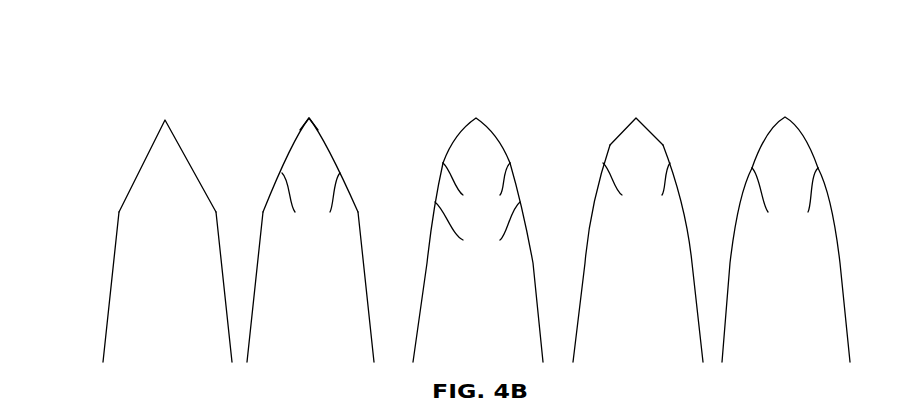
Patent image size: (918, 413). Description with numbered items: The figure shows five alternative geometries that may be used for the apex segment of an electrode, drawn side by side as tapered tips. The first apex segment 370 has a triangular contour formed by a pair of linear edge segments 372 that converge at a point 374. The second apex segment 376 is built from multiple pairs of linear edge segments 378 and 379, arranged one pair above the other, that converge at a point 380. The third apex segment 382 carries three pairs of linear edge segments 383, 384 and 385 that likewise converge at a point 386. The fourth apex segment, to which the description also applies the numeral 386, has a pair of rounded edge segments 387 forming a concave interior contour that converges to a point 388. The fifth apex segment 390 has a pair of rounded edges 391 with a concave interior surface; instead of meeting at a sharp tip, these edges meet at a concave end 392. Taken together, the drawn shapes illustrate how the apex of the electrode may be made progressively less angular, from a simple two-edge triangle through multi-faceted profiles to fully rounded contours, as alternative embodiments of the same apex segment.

The apex segment 370 is at (141, 108).
The linear edge segments 372 is at (142, 165).
The point 374 is at (166, 114).
The apex segment 376 is at (287, 68).
The linear edge segments 378 is at (311, 196).
The linear edge segments 379 is at (299, 130).
The point 380 is at (310, 113).
The apex segment 382 is at (452, 76).
The linear edge segments 383 is at (477, 227).
The linear edge segments 384 is at (476, 186).
The linear edge segments 385 is at (505, 107).
The point / apex segment 386 is at (627, 76).
The rounded edge segments 387 is at (636, 186).
The point 388 is at (638, 113).
The apex segment 390 is at (776, 76).
The rounded edges 391 is at (785, 197).
The concave end 392 is at (783, 114).